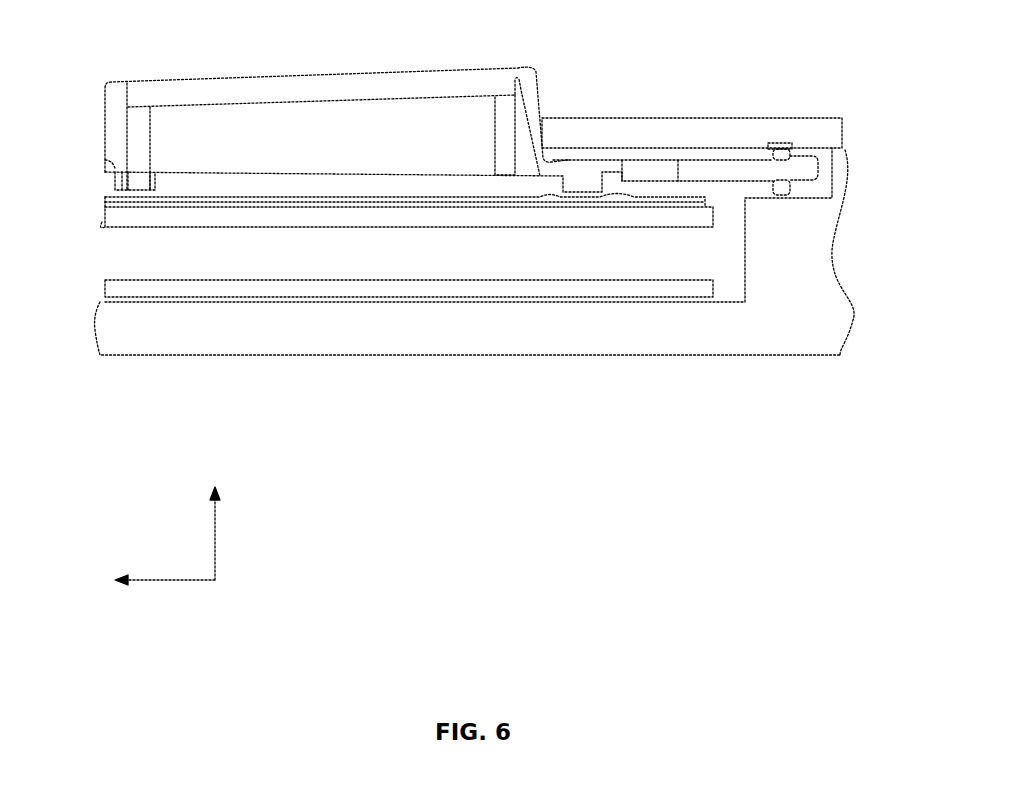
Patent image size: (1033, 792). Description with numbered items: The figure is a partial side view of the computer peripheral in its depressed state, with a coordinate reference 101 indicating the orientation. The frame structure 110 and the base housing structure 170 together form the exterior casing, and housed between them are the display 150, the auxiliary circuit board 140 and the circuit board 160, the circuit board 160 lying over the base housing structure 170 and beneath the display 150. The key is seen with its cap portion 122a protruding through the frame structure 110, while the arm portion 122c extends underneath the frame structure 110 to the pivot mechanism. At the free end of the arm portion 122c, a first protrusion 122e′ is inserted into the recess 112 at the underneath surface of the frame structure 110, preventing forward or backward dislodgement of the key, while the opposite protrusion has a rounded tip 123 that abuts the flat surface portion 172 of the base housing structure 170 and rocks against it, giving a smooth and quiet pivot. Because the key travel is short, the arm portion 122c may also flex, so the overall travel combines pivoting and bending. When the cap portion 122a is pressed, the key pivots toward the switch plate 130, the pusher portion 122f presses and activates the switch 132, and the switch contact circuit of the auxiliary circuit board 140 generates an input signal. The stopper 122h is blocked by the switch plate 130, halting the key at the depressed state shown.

The electronic device 101 is at (188, 623).
The frame structure 110 is at (653, 137).
The recess 112 is at (782, 143).
The cap portion 122a is at (278, 87).
The arm portion 122c is at (808, 172).
The first protrusion 122e′ is at (786, 153).
The pusher portion 122f is at (587, 180).
The stopper 122h is at (122, 190).
The rounded tip 123 is at (780, 200).
The switch plate 130 is at (483, 213).
The switch 132 is at (610, 200).
The auxiliary circuit board 140 is at (427, 213).
The display 150 is at (360, 215).
The circuit board 160 is at (205, 292).
The base housing structure 170 is at (670, 339).
The flat surface portion 172 is at (822, 202).